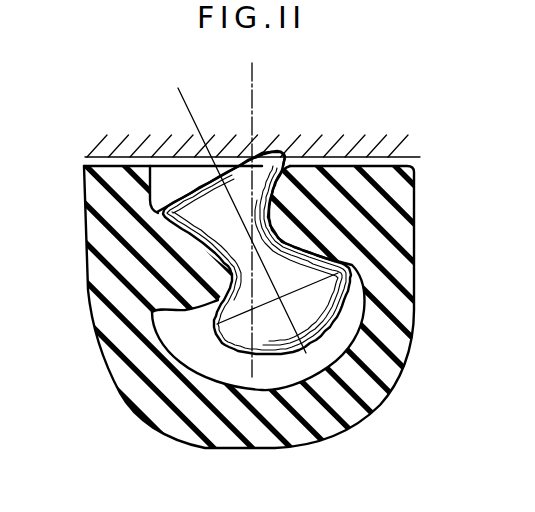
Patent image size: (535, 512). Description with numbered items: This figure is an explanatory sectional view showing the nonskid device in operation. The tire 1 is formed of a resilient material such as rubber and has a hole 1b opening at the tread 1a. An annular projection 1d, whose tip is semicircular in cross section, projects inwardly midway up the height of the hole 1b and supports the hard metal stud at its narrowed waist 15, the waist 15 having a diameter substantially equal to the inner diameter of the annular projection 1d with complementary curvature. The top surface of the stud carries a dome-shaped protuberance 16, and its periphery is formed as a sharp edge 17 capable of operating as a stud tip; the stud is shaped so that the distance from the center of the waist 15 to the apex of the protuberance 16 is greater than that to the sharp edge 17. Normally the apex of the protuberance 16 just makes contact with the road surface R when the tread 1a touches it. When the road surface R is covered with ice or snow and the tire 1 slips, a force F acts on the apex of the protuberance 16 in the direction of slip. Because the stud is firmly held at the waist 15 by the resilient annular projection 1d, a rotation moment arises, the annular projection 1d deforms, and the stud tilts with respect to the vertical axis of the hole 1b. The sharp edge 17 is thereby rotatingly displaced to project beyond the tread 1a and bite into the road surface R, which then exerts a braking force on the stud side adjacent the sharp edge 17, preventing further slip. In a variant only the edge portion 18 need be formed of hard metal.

The tire 1 is at (396, 269).
The tread 1a is at (128, 166).
The hole 1b is at (172, 176).
The annular projection 1d is at (203, 260).
The waist 15 is at (262, 240).
The dome-shaped protuberance 16 is at (184, 196).
The sharp edge 17 is at (286, 155).
The edge portion 18 is at (272, 153).
The force F is at (403, 125).
The road surface R is at (407, 157).